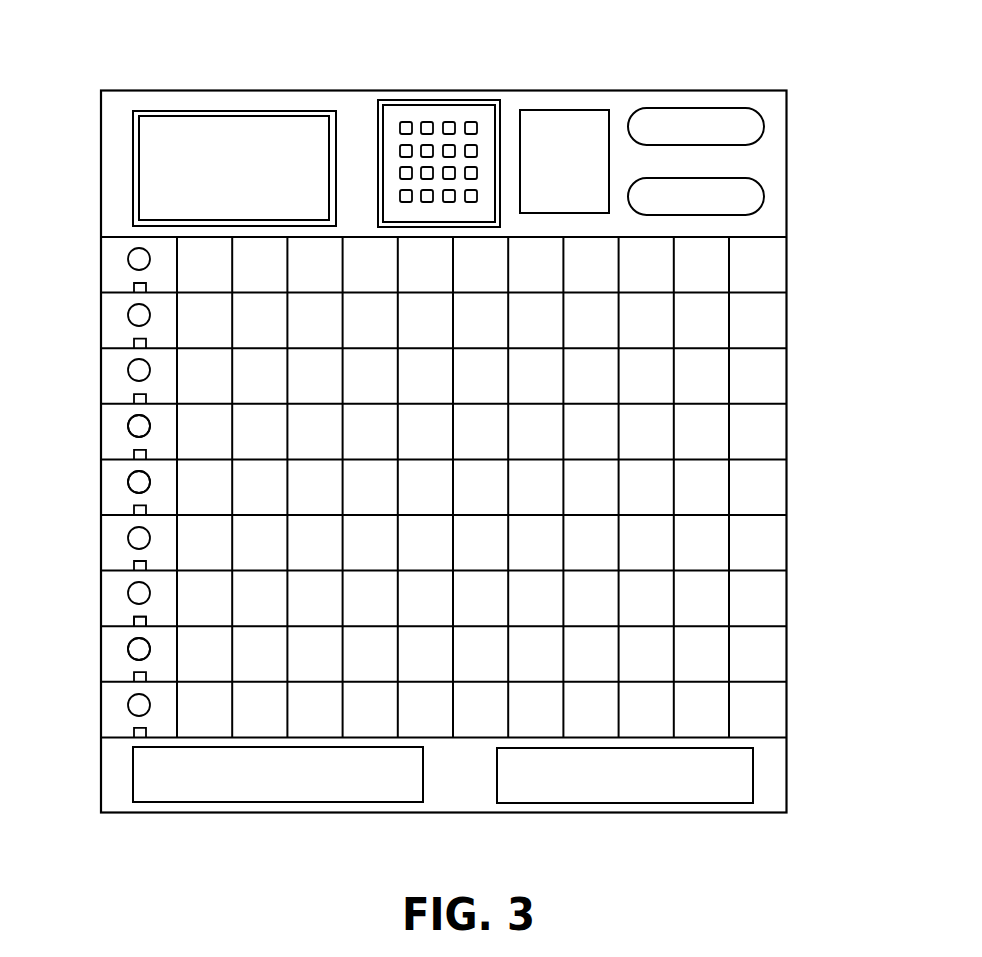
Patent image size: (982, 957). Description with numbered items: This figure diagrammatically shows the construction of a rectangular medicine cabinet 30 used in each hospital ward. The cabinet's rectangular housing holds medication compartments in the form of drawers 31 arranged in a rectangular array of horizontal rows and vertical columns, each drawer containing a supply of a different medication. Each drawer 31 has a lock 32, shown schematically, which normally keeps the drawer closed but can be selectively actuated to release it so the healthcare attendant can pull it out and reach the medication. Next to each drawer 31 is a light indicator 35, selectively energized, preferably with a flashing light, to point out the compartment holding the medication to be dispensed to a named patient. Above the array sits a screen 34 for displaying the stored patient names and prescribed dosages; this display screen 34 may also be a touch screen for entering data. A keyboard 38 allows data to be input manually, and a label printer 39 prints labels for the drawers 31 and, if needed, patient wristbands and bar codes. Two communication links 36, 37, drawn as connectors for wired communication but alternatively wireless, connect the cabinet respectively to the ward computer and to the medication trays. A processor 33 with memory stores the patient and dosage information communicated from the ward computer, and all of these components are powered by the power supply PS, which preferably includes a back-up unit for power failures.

The medicine cabinet 30 is at (141, 65).
The drawer 31 is at (120, 497).
The lock 32 is at (121, 429).
The processor 33 is at (161, 786).
The screen 34 is at (157, 160).
The light indicator 35 is at (123, 651).
The communication link 36 is at (706, 124).
The communication link 37 is at (745, 195).
The keyboard 38 is at (437, 115).
The label printer 39 is at (548, 133).
The power supply PS is at (522, 786).